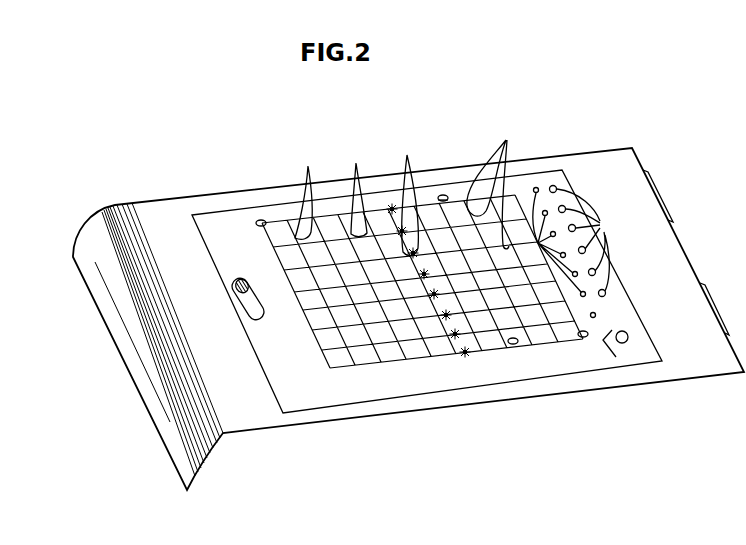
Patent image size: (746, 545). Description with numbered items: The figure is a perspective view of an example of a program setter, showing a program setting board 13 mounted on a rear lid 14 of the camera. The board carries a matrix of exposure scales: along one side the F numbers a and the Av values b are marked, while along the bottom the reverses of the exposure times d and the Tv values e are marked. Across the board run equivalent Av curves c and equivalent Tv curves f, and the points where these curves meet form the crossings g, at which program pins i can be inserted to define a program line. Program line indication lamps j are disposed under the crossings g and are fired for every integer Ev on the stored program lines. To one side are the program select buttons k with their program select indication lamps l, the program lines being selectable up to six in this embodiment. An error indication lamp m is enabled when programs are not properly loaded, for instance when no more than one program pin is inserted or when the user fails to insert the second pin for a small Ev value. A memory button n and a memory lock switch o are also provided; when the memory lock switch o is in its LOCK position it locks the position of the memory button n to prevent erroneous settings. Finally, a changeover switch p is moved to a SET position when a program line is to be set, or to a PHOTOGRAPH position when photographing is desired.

The program setting board 13 is at (401, 298).
The rear lid 14 is at (657, 275).
The F numbers a is at (242, 213).
The Av values b is at (226, 216).
The equivalent Av curves c is at (356, 164).
The reverses of the exposure times d is at (306, 384).
The Tv values e is at (318, 399).
The equivalent Tv curves f is at (308, 166).
The crossings g is at (489, 185).
The program pins i is at (443, 194).
The program line indication lamps j is at (407, 155).
The program select buttons k is at (577, 242).
The program select indication lamps l is at (538, 243).
The error indication lamp m is at (590, 315).
The memory button n is at (629, 336).
The memory lock switch o is at (628, 333).
The changeover switch p is at (236, 291).